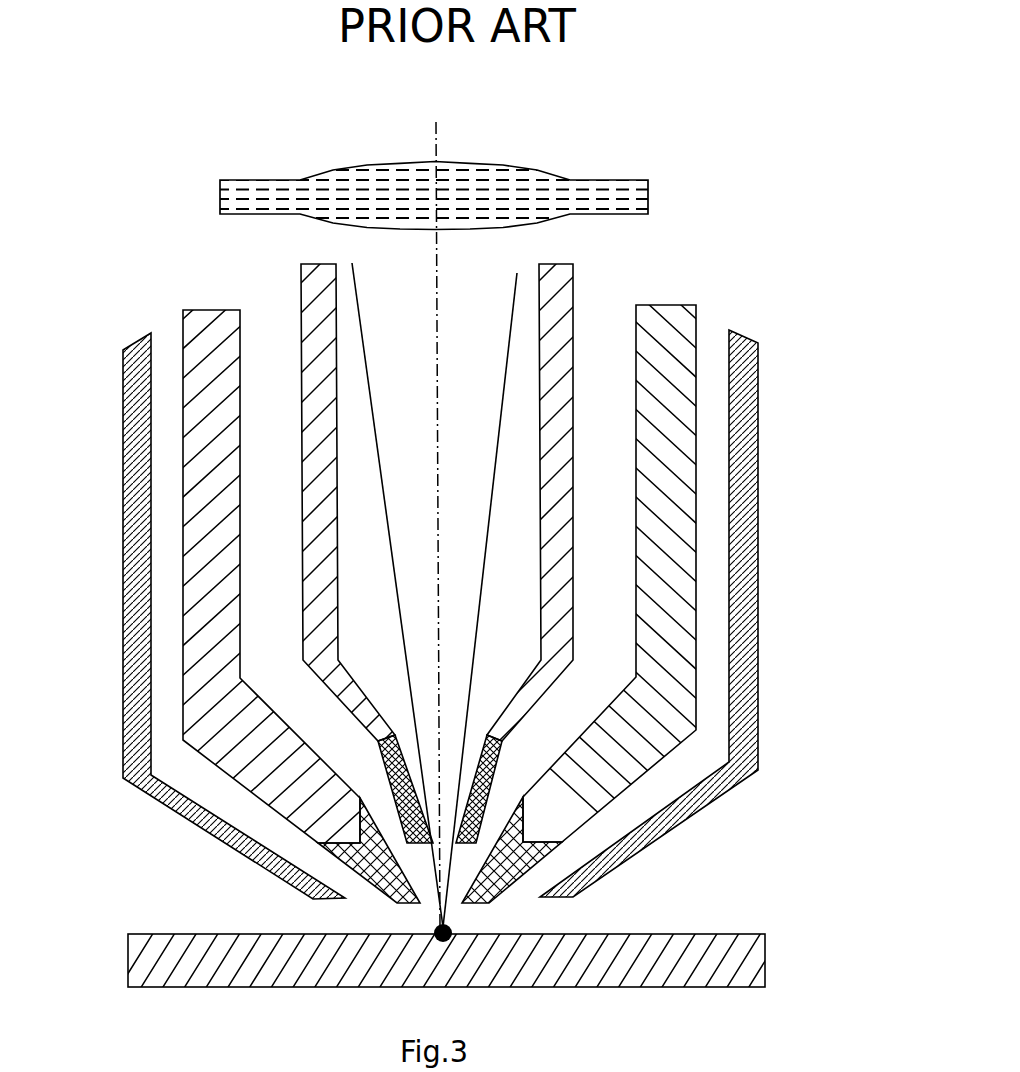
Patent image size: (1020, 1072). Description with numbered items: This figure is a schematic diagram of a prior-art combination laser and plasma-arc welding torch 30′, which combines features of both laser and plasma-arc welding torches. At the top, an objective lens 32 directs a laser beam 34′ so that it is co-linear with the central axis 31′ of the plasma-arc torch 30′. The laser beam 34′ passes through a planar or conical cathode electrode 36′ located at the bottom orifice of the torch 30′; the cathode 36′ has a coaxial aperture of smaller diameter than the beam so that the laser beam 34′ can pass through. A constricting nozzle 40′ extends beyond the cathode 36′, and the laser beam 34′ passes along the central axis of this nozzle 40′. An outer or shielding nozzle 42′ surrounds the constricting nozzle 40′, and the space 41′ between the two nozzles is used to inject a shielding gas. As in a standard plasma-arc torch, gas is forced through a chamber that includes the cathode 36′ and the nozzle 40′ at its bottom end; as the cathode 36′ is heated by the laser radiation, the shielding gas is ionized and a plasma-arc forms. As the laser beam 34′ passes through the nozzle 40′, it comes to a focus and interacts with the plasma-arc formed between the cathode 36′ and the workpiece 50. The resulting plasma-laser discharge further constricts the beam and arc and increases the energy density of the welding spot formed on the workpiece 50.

The welding torch 30′ is at (163, 233).
The central axis 31′ is at (433, 268).
The objective lens 32 is at (550, 143).
The laser beam 34′ is at (618, 598).
The cathode electrode 36′ is at (483, 788).
The constricting nozzle 40′ is at (324, 511).
The space 41′ is at (379, 509).
The shielding nozzle 42′ is at (193, 809).
The workpiece 50 is at (505, 926).